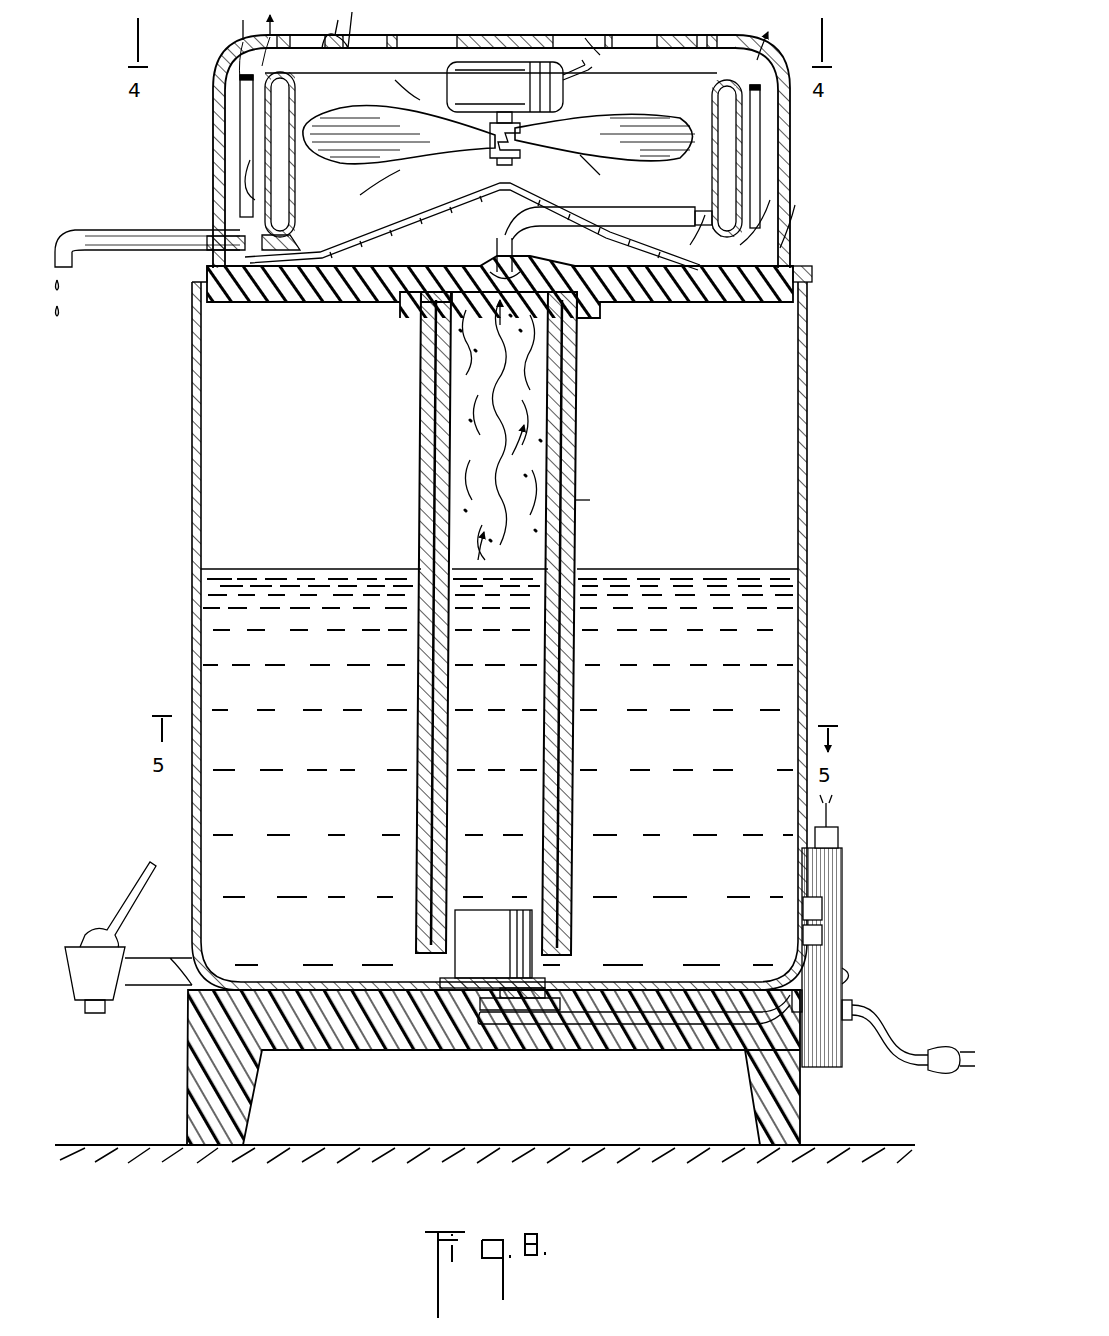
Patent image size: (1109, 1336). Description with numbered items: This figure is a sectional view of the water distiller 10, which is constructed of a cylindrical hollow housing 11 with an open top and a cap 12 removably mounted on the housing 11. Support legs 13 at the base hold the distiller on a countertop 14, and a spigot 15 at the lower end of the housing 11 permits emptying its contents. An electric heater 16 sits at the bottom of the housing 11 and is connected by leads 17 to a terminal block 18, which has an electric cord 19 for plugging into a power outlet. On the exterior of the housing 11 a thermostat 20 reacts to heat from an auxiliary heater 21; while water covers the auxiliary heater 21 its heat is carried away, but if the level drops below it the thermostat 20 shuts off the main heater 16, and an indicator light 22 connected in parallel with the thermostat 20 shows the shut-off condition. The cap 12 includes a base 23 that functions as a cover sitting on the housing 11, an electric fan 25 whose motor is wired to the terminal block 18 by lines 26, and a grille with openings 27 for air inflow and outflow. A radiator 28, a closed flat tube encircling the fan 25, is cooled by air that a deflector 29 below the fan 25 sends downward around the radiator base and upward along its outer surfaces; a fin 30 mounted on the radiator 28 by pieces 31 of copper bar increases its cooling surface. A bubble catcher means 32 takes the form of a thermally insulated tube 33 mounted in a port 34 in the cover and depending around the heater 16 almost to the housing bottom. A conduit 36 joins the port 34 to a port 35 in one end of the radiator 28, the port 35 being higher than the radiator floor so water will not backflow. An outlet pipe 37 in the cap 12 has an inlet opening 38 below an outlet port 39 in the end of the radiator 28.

The water distiller 10 is at (178, 614).
The housing 11 is at (192, 482).
The cap 12 is at (213, 128).
The support legs 13 is at (187, 1094).
The countertop 14 is at (95, 1145).
The spigot 15 is at (110, 892).
The electric heater 16 is at (495, 892).
The leads 17 is at (620, 1026).
The terminal block 18 is at (843, 940).
The electric cord 19 is at (905, 1042).
The thermostat 20 is at (822, 908).
The auxiliary heater 21 is at (822, 933).
The indicator light 22 is at (850, 976).
The base 23 is at (300, 290).
The electric fan 25 is at (565, 92).
The lines 26 is at (568, 62).
The openings 27 is at (668, 18).
The radiator 28 is at (296, 178).
The deflector 29 is at (460, 232).
The fin 30 is at (757, 160).
The pieces of copper bar 31 is at (250, 160).
The bubble catcher means 32 is at (584, 442).
The thermally insulated tube 33 is at (576, 500).
The port 34 is at (515, 280).
The port 35 is at (715, 220).
The conduit 36 is at (636, 212).
The outlet pipe 37 is at (98, 230).
The inlet opening 38 is at (292, 245).
The outlet port 39 is at (225, 255).